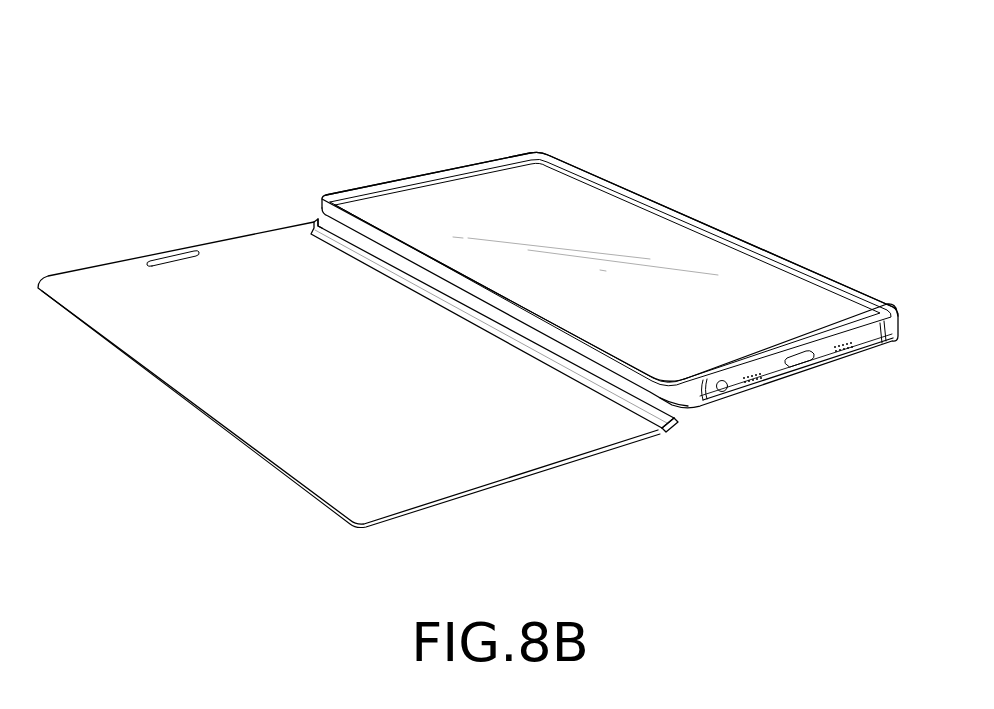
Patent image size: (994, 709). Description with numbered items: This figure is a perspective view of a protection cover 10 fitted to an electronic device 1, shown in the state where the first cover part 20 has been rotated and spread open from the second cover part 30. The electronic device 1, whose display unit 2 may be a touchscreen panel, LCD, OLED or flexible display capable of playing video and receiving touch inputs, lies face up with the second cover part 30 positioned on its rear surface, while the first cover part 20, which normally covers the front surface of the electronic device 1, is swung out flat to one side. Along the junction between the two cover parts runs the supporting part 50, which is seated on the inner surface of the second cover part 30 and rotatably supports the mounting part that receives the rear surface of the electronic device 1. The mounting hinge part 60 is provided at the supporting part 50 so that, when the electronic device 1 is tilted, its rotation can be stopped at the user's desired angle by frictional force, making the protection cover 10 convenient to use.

The protection cover 10 is at (203, 80).
The electronic device 1 is at (452, 175).
The display unit 2 is at (767, 272).
The first cover part 20 is at (125, 292).
The second cover part 30 is at (857, 357).
The supporting part 50 is at (697, 407).
The mounting hinge part 60 is at (316, 218).